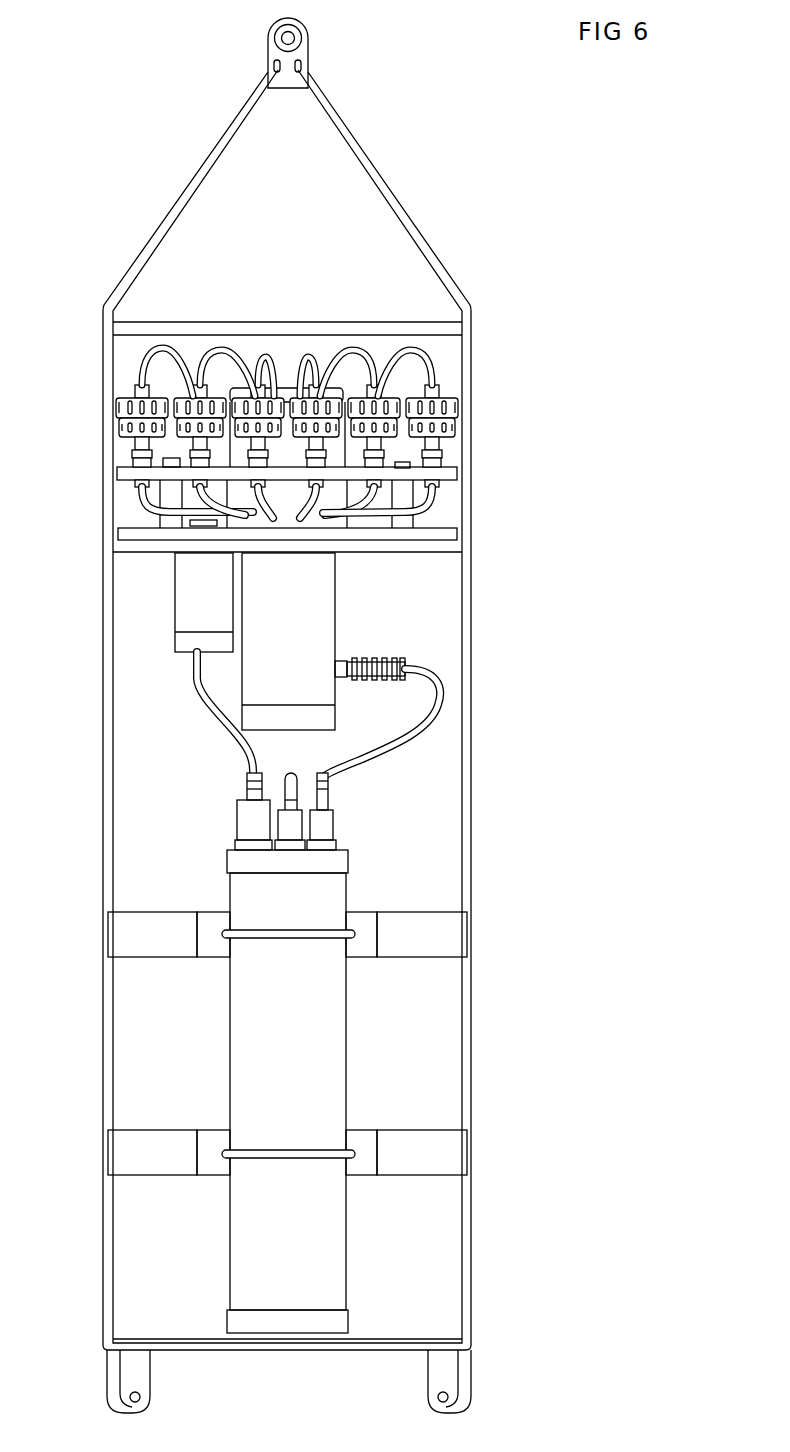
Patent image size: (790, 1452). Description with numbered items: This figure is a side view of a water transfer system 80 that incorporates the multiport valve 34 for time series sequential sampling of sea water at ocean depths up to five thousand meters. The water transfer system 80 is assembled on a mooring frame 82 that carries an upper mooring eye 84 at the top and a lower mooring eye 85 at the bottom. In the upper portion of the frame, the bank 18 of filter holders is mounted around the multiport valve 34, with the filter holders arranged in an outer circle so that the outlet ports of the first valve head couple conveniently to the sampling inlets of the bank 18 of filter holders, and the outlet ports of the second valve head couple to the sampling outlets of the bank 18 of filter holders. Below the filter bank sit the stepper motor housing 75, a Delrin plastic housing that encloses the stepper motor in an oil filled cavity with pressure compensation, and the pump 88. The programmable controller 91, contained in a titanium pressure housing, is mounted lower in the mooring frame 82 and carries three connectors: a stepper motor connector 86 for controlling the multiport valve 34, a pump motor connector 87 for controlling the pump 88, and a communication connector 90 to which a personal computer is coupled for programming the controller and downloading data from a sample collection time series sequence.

The water transfer system 80 is at (528, 210).
The mooring frame 82 is at (472, 808).
The upper mooring eye 84 is at (300, 33).
The lower mooring eye 85 is at (440, 1382).
The bank of filter holders 18 is at (452, 408).
The multiport valve 34 is at (290, 390).
The stepper motor housing 75 is at (305, 643).
The pump 88 is at (220, 615).
The pump motor connector 87 is at (253, 820).
The communication connector 90 is at (292, 825).
The stepper motor connector 86 is at (323, 823).
The programmable controller 91 is at (300, 1053).